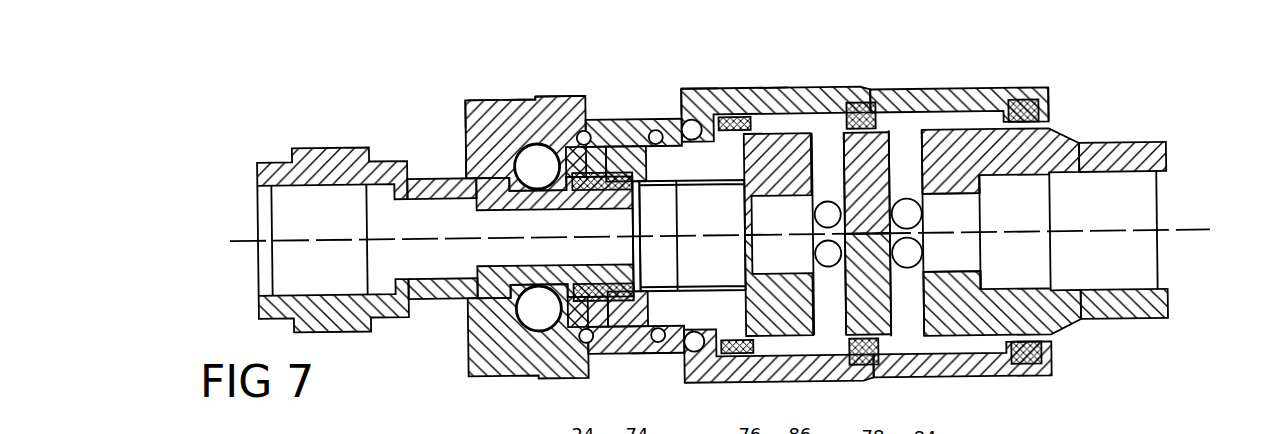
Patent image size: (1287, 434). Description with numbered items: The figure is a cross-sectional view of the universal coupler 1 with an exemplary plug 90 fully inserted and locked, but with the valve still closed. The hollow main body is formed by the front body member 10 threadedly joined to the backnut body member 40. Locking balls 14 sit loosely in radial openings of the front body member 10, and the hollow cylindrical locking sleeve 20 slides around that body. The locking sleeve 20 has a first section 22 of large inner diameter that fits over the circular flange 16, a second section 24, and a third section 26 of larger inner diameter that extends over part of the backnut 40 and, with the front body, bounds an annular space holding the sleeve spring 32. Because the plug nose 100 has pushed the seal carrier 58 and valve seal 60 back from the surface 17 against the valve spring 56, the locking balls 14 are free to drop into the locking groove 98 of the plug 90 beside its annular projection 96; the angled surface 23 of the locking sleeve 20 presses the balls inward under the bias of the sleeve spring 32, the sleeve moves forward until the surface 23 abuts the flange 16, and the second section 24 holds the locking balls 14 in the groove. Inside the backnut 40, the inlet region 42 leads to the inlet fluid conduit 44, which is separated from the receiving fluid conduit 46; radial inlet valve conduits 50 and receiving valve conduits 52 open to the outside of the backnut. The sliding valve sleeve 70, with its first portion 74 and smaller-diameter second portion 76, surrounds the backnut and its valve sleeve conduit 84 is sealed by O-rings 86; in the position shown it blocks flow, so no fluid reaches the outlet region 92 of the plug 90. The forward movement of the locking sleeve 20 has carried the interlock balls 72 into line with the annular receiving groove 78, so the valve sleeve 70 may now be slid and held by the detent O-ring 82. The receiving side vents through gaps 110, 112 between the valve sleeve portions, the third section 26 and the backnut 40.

The coupler 1 is at (1092, 45).
The front body member 10 is at (457, 332).
The locking balls 14 is at (530, 178).
The circular flange 16 is at (455, 105).
The surface 17 is at (506, 228).
The locking sleeve 20 is at (518, 99).
The first section 22 is at (487, 78).
The surface 23 is at (470, 158).
The second section 24 is at (552, 71).
The third section 26 is at (649, 364).
The sleeve spring 32 is at (603, 121).
The backnut body member 40 is at (1083, 150).
The inlet region 42 is at (1135, 205).
The inlet fluid conduit 44 is at (939, 268).
The receiving fluid conduit 46 is at (761, 268).
The inlet valve conduits 50 is at (897, 178).
The receiving valve conduits 52 is at (817, 177).
The valve spring 56 is at (700, 291).
The seal carrier 58 is at (650, 190).
The valve seal 60 is at (615, 264).
The valve sleeve 70 is at (953, 99).
The interlock balls 72 is at (705, 90).
The first portion 74 is at (692, 77).
The second portion 76 is at (779, 79).
The annular receiving groove 78 is at (680, 125).
The detent O-ring 82 is at (979, 136).
The valve sleeve conduit 84 is at (905, 92).
The O-rings 86 is at (862, 100).
The plug 90 is at (432, 160).
The outlet region 92 is at (285, 216).
The annular projection 96 is at (562, 182).
The locking groove 98 is at (518, 184).
The plug nose 100 is at (612, 194).
The gap 110 is at (795, 90).
The gap 112 is at (738, 90).